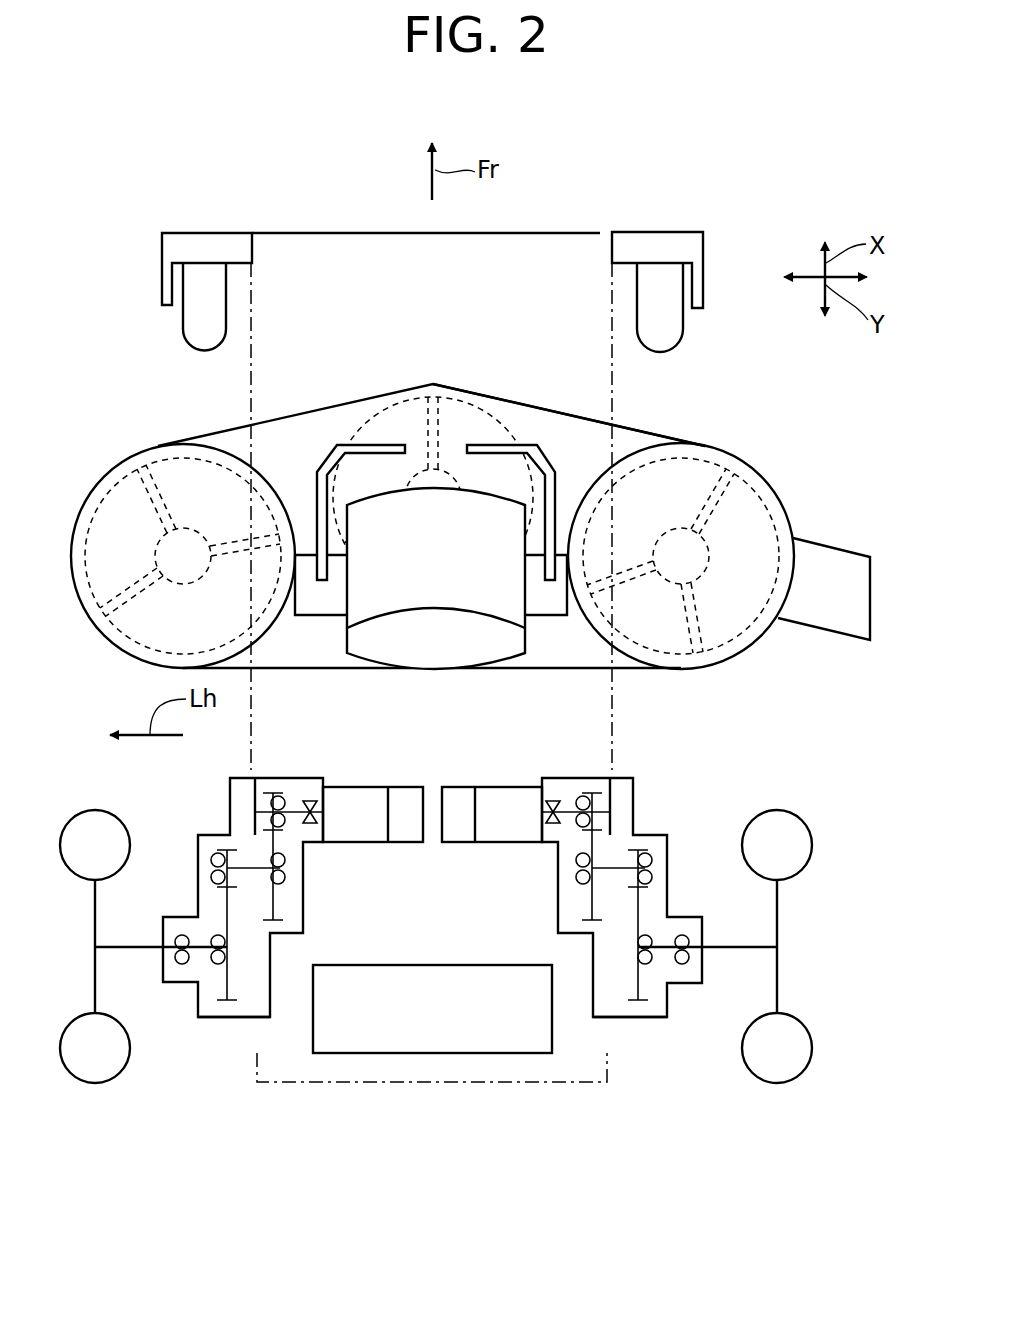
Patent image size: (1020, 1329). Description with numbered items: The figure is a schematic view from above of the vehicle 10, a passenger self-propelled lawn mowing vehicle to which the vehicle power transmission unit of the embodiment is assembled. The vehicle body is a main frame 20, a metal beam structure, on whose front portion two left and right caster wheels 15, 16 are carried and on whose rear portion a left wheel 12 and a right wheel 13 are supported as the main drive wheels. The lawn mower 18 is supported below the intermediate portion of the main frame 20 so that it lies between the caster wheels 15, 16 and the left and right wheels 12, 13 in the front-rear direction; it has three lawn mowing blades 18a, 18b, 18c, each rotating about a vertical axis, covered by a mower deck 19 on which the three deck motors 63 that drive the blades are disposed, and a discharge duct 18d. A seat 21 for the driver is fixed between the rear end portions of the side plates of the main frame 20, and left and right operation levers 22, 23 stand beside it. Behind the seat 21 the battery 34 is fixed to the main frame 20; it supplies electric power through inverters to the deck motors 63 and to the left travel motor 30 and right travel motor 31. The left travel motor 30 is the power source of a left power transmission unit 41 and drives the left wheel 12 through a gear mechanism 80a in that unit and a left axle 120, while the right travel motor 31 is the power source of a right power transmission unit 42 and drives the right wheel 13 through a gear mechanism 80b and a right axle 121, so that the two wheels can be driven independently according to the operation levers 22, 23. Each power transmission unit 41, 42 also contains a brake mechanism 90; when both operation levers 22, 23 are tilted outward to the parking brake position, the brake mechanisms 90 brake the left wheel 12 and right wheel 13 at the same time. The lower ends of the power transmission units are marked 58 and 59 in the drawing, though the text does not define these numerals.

The vehicle 10 is at (628, 182).
The left wheel 12 is at (130, 1052).
The right wheel 13 is at (742, 1053).
The caster wheel 15 is at (181, 325).
The caster wheel 16 is at (684, 323).
The lawn mower 18 is at (630, 420).
The lawn mowing blade 18a is at (402, 532).
The lawn mowing blade 18b is at (475, 400).
The lawn mowing blade 18c is at (761, 466).
The discharge duct 18d is at (815, 632).
The mower deck 19 is at (517, 402).
The main frame 20 is at (613, 708).
The seat 21 is at (441, 652).
The operation lever 22 is at (383, 443).
The operation lever 23 is at (530, 443).
The left travel motor 30 is at (358, 787).
The right travel motor 31 is at (510, 787).
The battery 34 is at (383, 1056).
The power transmission unit 41 is at (436, 911).
The power transmission unit 42 is at (575, 916).
The left gearbox lower end 58 is at (232, 1020).
The right gearbox lower end 59 is at (648, 1020).
The deck motor 63 is at (191, 585).
The gear mechanism 80a is at (230, 978).
The gear mechanism 80b is at (633, 972).
The brake mechanism 90 is at (235, 803).
The axle 120 is at (127, 950).
The axle 121 is at (732, 948).